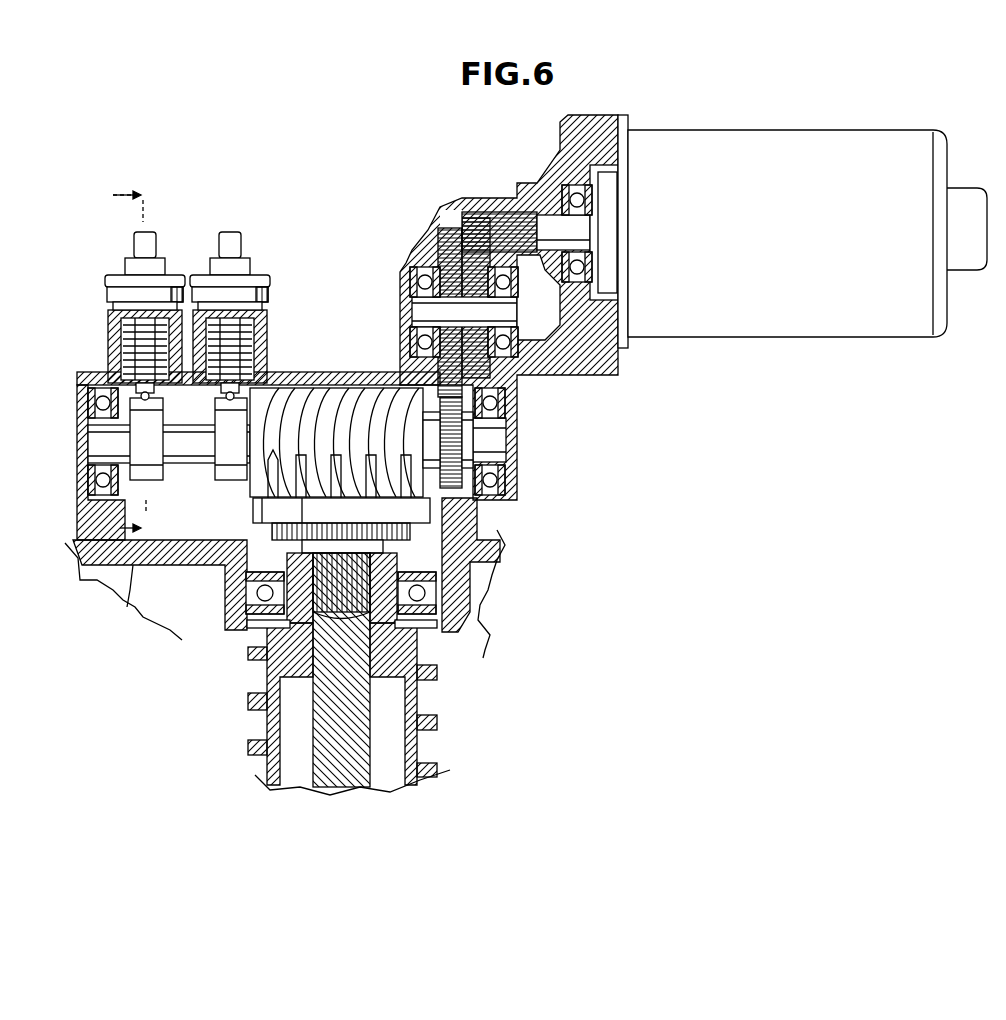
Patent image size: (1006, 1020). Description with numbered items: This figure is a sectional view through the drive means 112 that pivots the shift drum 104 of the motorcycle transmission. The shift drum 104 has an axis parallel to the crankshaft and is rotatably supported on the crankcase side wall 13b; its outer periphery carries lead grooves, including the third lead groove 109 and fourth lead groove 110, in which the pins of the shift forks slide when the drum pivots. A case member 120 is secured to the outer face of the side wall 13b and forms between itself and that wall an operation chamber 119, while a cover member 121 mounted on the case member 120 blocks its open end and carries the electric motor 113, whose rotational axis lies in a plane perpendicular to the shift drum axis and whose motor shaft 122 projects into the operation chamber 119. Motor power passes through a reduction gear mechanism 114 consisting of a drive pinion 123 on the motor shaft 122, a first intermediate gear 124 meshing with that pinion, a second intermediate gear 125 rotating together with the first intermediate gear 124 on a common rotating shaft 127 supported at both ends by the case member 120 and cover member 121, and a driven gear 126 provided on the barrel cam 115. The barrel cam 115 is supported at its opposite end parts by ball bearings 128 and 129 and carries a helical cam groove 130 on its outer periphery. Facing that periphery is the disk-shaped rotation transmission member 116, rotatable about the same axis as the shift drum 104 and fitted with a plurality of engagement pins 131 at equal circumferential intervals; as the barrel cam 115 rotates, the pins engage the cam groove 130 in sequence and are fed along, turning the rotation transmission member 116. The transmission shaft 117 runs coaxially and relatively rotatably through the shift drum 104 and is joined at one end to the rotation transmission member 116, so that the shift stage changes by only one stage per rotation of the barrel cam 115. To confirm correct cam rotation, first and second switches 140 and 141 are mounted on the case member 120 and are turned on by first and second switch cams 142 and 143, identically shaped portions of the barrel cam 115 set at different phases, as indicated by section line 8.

The section line 8 is at (140, 361).
The side wall 13b is at (127, 604).
The shift drum 104 is at (257, 655).
The third lead groove 109 is at (432, 748).
The fourth lead groove 110 is at (260, 683).
The drive means 112 is at (240, 509).
The electric motor 113 is at (798, 244).
The reduction gear mechanism 114 is at (480, 205).
The barrel cam 115 is at (345, 395).
The rotation transmission member 116 is at (473, 521).
The transmission shaft 117 is at (357, 707).
The operation chamber 119 is at (118, 507).
The case member 120 is at (315, 375).
The cover member 121 is at (605, 373).
The motor shaft 122 is at (460, 217).
The drive pinion 123 is at (522, 215).
The first intermediate gear 124 is at (512, 367).
The second intermediate gear 125 is at (440, 247).
The driven gear 126 is at (467, 435).
The rotating shaft 127 is at (420, 312).
The ball bearing 128 is at (512, 408).
The ball bearing 129 is at (95, 378).
The helical cam groove 130 is at (292, 398).
The engagement pins 131 is at (305, 470).
The first switch 140 is at (120, 285).
The second switch 141 is at (258, 285).
The first switch cam 142 is at (130, 437).
The second switch cam 143 is at (222, 420).